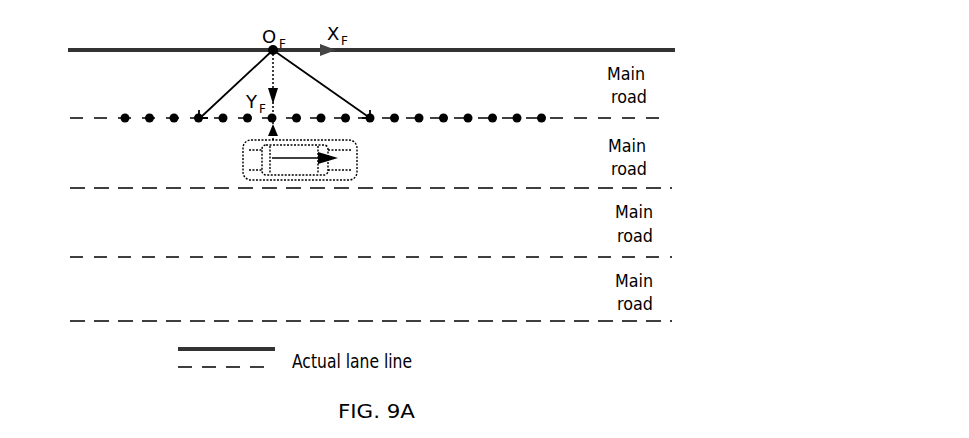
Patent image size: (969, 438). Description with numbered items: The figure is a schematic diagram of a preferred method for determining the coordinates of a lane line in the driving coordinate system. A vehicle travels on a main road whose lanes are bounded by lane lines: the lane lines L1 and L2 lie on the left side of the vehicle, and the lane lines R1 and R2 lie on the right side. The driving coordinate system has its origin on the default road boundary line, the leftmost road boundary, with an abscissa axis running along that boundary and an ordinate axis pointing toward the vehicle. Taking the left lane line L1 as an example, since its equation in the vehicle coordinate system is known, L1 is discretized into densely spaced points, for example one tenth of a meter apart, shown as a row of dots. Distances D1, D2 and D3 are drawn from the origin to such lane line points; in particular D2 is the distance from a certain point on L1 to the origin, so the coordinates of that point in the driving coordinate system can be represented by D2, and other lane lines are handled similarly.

The distance from origin to a lane line point D1 is at (236, 84).
The distance from lane line point to origin D2 is at (265, 84).
The distance from origin to a lane line point D3 is at (321, 84).
The left lane line L1 is at (535, 145).
The left lane line L2 is at (529, 73).
The right lane line R1 is at (536, 211).
The right lane line R2 is at (536, 280).